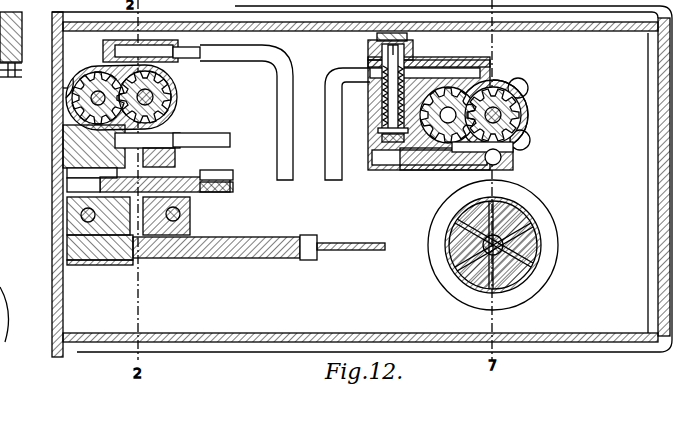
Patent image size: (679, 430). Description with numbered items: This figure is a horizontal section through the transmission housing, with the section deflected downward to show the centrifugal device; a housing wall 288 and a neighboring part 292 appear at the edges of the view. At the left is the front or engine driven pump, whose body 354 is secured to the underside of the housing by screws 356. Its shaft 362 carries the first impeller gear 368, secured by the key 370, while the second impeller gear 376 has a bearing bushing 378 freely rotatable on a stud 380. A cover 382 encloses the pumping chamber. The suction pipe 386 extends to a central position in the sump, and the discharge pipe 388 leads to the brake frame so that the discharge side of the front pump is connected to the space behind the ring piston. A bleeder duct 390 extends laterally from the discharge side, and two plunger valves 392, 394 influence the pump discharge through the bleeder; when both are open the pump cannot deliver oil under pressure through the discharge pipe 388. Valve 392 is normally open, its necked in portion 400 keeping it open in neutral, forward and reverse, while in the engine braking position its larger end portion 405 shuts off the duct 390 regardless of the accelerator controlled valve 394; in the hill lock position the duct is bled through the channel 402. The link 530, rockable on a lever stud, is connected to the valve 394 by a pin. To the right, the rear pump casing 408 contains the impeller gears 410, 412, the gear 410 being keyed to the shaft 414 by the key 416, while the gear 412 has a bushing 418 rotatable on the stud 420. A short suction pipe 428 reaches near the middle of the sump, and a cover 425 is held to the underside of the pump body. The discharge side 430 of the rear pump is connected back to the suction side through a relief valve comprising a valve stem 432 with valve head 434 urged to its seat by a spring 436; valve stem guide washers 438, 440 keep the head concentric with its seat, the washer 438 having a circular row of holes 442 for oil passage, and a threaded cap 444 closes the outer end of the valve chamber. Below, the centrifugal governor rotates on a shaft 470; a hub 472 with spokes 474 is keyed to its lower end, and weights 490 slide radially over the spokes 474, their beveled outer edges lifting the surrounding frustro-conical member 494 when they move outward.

The housing 288 is at (75, 322).
The adjacent housing part 292 is at (11, 177).
The body 354 is at (182, 93).
The screws 356 is at (180, 214).
The shaft 362 is at (67, 89).
The first impeller gear 368 is at (100, 72).
The key 370 is at (67, 112).
The second impeller gear 376 is at (178, 80).
The bearing bushing 378 is at (142, 74).
The stud 380 is at (180, 104).
The cover 382 is at (182, 120).
The suction pipe 386 is at (285, 128).
The discharge pipe 388 is at (225, 137).
The bleeder duct 390 is at (175, 156).
The plunger valve 392 is at (231, 192).
The plunger valve 394 is at (236, 258).
The necked in portion 400 is at (118, 188).
The channel 402 is at (207, 173).
The larger end portion 405 is at (92, 174).
The rear pump casing 408 is at (528, 110).
The impeller gear 410 is at (528, 124).
The impeller gear 412 is at (492, 84).
The shaft 414 is at (527, 98).
The key 416 is at (527, 138).
The bushing 418 is at (488, 100).
The stud 420 is at (446, 108).
The cover 425 is at (526, 86).
The short suction pipe 428 is at (332, 108).
The discharge side 430 is at (470, 160).
The valve stem 432 is at (389, 90).
The valve head 434 is at (429, 115).
The spring 436 is at (384, 112).
The valve stem guide washer 438 is at (380, 130).
The valve stem guide washer 440 is at (412, 58).
The holes 442 is at (383, 140).
The threaded cap 444 is at (375, 38).
The shaft 470 is at (540, 237).
The hub 472 is at (530, 218).
The spokes 474 is at (535, 228).
The weights 490 is at (540, 250).
The frustro-conical member 494 is at (548, 268).
The link 530 is at (348, 246).